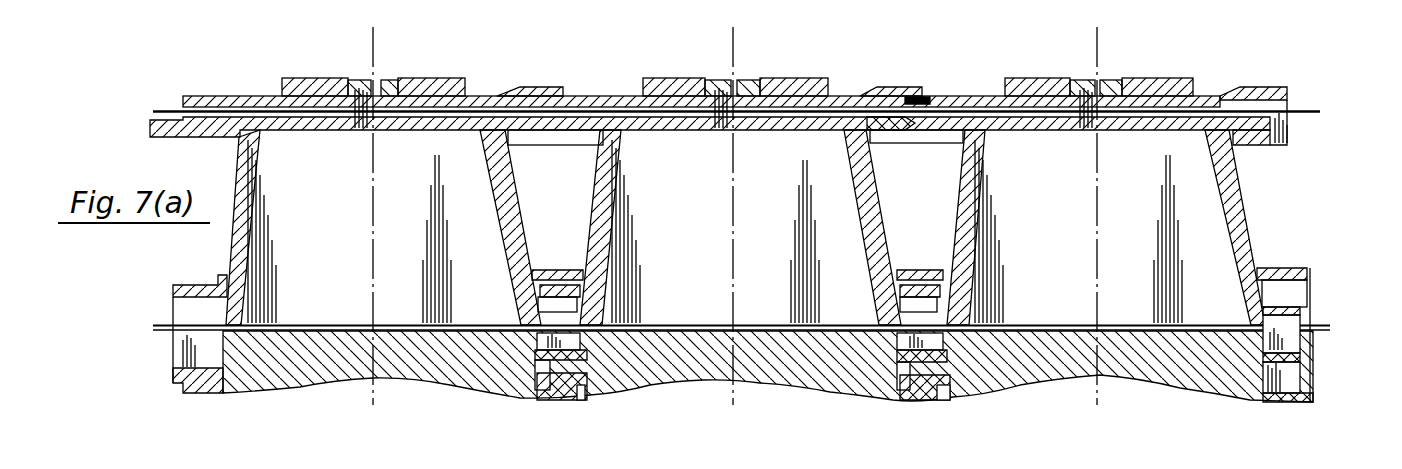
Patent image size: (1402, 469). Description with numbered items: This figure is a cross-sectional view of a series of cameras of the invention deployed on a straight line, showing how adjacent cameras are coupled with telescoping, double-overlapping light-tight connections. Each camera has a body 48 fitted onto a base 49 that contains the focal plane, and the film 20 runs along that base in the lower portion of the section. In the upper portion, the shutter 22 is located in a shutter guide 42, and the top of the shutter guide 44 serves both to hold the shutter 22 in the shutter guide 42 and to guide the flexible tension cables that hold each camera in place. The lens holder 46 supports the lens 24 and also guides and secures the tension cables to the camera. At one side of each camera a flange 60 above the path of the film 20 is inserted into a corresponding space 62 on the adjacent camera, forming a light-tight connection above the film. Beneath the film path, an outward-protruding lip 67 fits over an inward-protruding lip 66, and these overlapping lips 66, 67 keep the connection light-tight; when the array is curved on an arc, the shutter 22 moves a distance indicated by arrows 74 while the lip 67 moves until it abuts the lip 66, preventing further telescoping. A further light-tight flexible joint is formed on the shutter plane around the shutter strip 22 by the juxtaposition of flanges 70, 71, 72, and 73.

The film 20 is at (1323, 316).
The shutter 22 is at (166, 110).
The lens 24 is at (388, 92).
The shutter guide 42 is at (797, 131).
The top of the shutter guide 44 is at (530, 94).
The lens holder 46 is at (462, 78).
The body 48 is at (258, 166).
The base 49 is at (318, 365).
The flange 60 is at (195, 285).
The space 62 is at (1295, 293).
The inward-protruding lip 66 is at (580, 392).
The outward-protruding lip 67 is at (185, 383).
The flange 70 is at (905, 96).
The flange 71 is at (880, 122).
The flange 72 is at (928, 98).
The flange 73 is at (892, 142).
The arrows 74 is at (1379, 462).